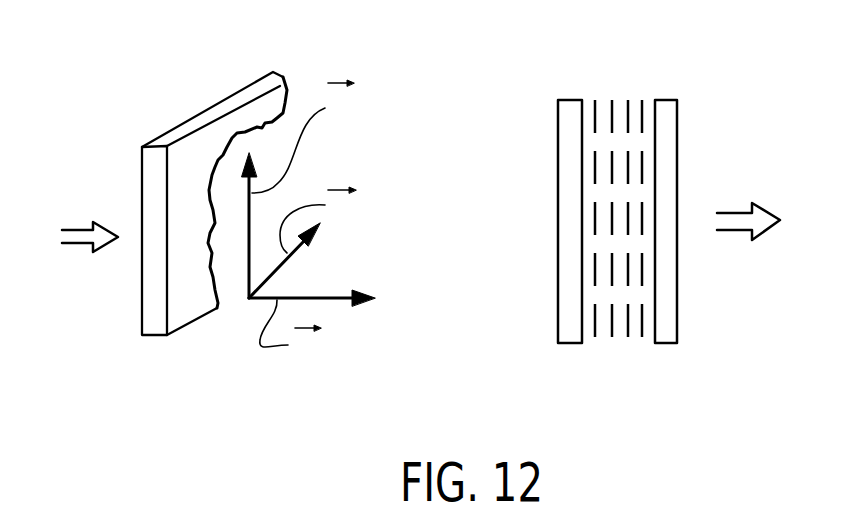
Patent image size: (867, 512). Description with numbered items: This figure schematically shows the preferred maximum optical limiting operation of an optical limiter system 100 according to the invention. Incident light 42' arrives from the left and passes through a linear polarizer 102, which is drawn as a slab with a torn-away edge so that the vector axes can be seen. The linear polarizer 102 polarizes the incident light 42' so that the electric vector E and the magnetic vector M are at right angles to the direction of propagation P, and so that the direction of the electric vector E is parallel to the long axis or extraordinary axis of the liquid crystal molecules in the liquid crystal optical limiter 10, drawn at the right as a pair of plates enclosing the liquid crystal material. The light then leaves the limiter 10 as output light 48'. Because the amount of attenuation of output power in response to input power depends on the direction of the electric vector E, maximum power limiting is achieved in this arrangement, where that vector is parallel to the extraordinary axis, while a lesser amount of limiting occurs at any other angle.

The optical limiter system 100 is at (420, 89).
The linear polarizer 102 is at (185, 130).
The liquid crystal optical limiter 10 is at (620, 86).
The incident light 42' is at (79, 211).
The output light beam 48' is at (748, 192).